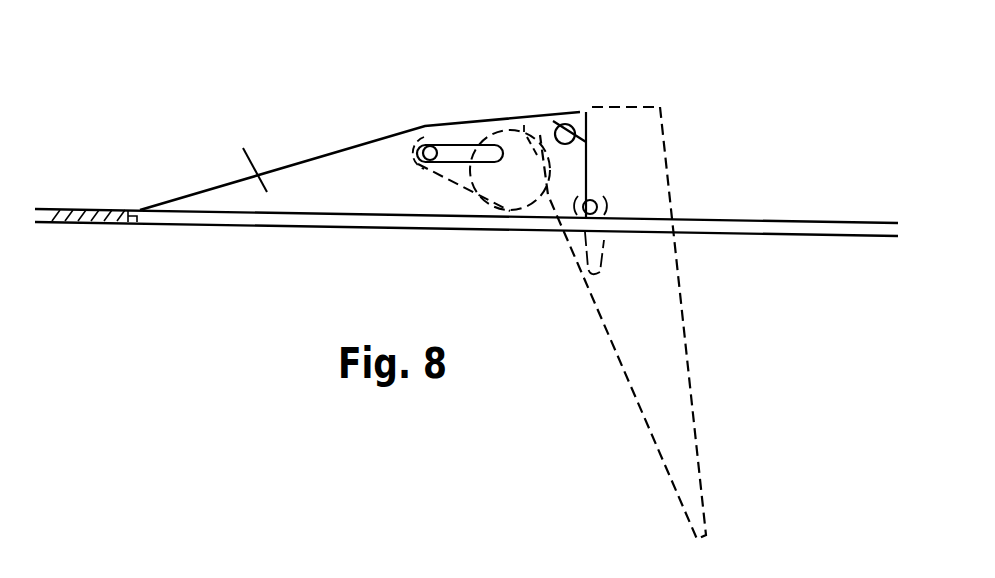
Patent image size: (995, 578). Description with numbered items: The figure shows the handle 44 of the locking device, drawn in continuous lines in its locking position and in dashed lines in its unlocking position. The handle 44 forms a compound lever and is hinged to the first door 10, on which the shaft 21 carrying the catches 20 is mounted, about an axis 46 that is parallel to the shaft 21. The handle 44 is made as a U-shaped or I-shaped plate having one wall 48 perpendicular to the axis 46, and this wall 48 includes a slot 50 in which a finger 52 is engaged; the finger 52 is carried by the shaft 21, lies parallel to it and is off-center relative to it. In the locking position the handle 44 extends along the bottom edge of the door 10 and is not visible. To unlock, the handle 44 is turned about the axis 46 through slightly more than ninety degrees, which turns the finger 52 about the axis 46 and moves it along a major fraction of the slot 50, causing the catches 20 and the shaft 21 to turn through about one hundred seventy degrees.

The first door 10 is at (63, 222).
The catches 20 is at (471, 132).
The shaft 21 is at (524, 125).
The handle 44 is at (304, 154).
The axis 46 is at (575, 127).
The wall 48 is at (243, 148).
The slot 50 is at (458, 144).
The finger 52 is at (428, 147).